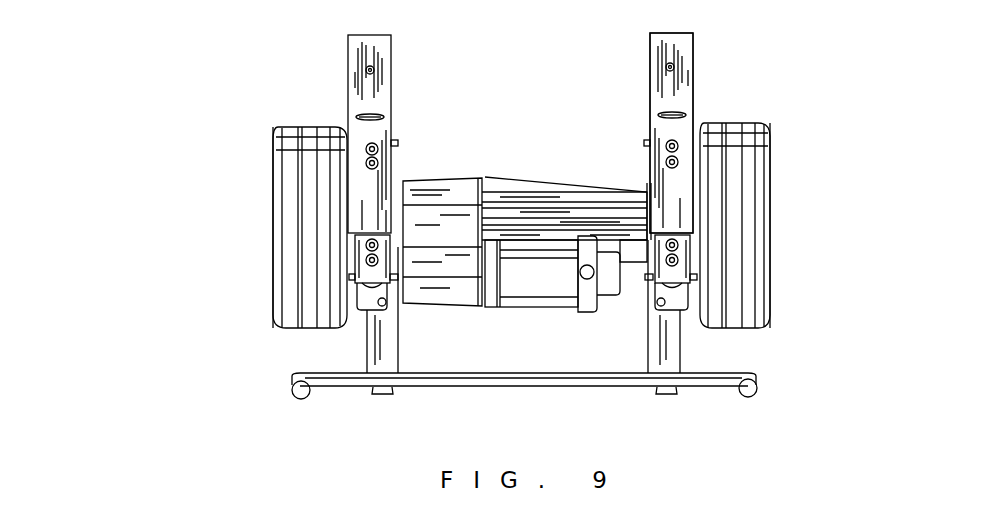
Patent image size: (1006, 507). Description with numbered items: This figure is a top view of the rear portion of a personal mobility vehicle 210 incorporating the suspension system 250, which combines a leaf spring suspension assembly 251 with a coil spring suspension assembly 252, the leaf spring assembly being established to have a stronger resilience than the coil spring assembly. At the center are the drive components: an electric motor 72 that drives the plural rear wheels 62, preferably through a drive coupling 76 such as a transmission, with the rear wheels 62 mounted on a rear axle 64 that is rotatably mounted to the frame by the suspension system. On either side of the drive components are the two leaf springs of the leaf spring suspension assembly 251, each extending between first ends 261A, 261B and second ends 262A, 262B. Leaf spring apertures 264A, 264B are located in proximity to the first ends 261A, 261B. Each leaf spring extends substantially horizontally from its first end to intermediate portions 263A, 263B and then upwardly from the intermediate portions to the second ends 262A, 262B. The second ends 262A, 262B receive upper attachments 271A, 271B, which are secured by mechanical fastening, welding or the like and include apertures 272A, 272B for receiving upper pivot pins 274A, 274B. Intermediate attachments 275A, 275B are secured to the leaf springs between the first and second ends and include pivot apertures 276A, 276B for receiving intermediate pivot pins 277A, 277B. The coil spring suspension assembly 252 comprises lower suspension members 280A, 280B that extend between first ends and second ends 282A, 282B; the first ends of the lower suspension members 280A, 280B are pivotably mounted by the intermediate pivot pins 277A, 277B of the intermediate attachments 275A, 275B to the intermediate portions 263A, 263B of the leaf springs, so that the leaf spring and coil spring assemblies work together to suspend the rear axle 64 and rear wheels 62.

The suspension system 250 is at (178, 113).
The personal mobility vehicle 210 is at (868, 110).
The leaf spring suspension assembly 251 is at (688, 72).
The coil spring suspension assembly 252 is at (653, 290).
The first end 261A is at (683, 40).
The first end 261B is at (355, 40).
The second end 262A is at (692, 240).
The second end 262B is at (356, 240).
The intermediate portion 263A is at (680, 105).
The intermediate portion 263B is at (363, 107).
The leaf spring aperture 264A is at (668, 67).
The leaf spring aperture 264B is at (374, 68).
The upper attachment 271A is at (690, 258).
The upper attachment 271B is at (366, 258).
The aperture 272A is at (690, 305).
The aperture 272B is at (358, 295).
The upper pivot pin 274A is at (695, 290).
The upper pivot pin 274B is at (355, 285).
The intermediate attachment 275A is at (775, 140).
The intermediate attachment 275B is at (366, 148).
The pivot aperture 276A is at (775, 162).
The pivot aperture 276B is at (366, 162).
The intermediate pivot pin 277A is at (645, 143).
The intermediate pivot pin 277B is at (398, 143).
The lower suspension member 280A is at (698, 308).
The lower suspension member 280B is at (366, 330).
The second end 282A is at (690, 305).
The second end 282B is at (362, 345).
The rear wheels 62 is at (275, 215).
The rear axle 64 is at (583, 178).
The electric motor 72 is at (530, 280).
The drive coupling 76 is at (450, 196).